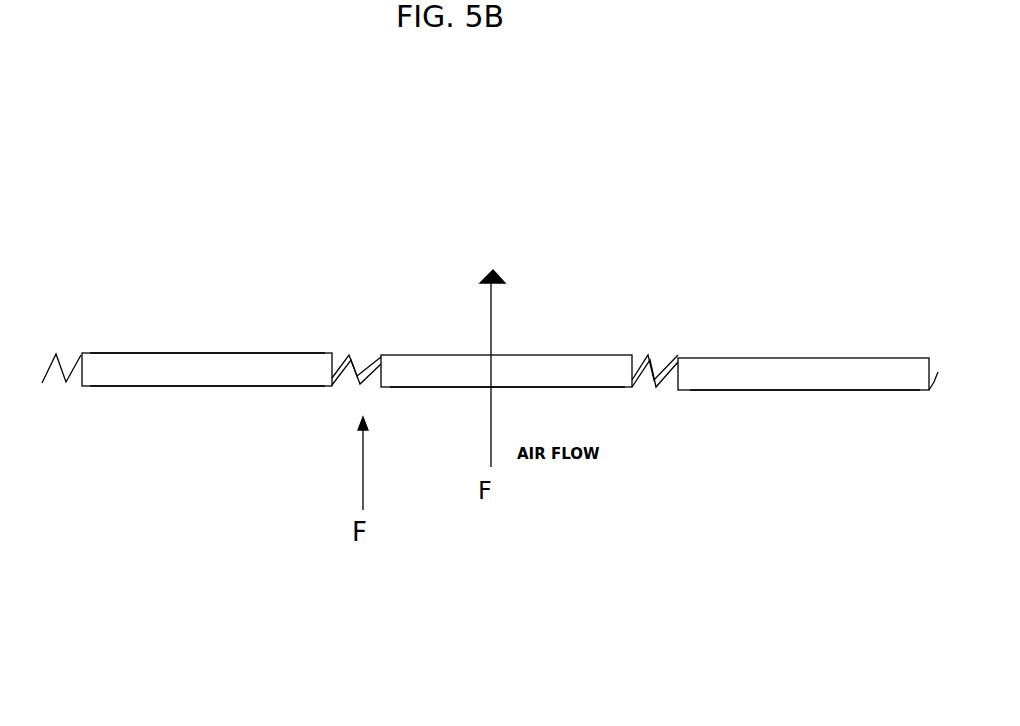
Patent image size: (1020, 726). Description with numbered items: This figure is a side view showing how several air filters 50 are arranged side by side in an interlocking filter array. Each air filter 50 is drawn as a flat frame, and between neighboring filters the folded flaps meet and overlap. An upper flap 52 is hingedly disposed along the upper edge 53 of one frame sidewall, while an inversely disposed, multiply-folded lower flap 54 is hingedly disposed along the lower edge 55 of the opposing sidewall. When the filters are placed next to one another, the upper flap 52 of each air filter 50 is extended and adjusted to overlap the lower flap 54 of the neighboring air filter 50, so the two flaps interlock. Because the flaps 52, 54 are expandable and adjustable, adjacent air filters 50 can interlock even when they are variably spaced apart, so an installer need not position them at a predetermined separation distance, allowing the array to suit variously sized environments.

The air filter 50 is at (252, 290).
The upper flap 52 is at (70, 360).
The upper edge 53 is at (118, 352).
The lower flap 54 is at (353, 395).
The lower edge 55 is at (453, 388).